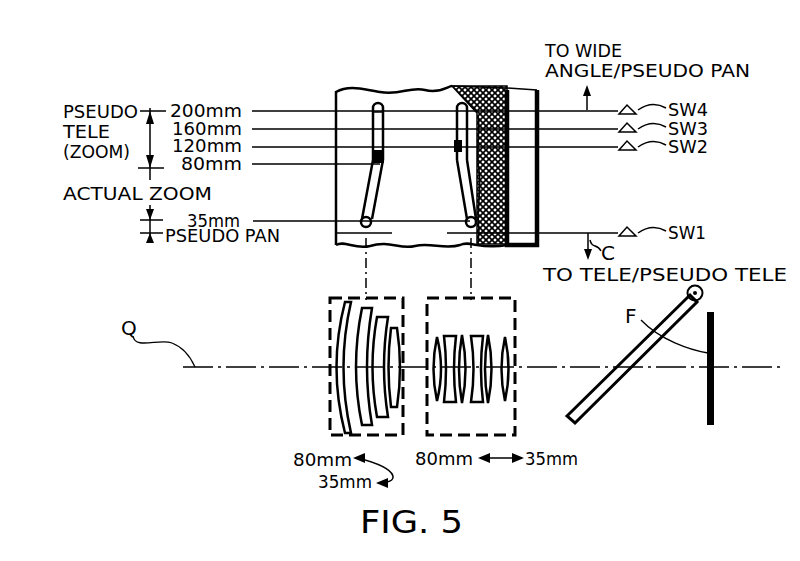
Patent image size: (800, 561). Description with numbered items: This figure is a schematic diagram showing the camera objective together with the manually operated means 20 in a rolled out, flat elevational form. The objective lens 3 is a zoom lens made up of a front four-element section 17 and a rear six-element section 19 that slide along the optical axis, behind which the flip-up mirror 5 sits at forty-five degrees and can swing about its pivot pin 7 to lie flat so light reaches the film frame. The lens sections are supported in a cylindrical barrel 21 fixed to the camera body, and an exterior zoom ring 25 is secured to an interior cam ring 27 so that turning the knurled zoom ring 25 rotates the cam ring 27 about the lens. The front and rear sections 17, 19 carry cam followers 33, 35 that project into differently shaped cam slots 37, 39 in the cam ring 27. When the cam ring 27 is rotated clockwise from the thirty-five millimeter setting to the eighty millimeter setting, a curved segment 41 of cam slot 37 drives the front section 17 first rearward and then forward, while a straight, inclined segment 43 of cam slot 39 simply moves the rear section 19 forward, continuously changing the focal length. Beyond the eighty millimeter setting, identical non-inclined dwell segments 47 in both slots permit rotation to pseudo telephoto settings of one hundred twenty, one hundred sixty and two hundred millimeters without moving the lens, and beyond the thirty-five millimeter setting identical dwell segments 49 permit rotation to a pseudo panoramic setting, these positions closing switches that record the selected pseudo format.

The manually operated means 20 is at (336, 101).
The cam ring 27 is at (404, 90).
The zoom ring 25 is at (484, 84).
The cylindrical barrel 21 is at (523, 100).
The dwell segments 47 is at (380, 113).
The cam slot 39 is at (456, 146).
The cam slot 37 is at (380, 158).
The curved segment 41 is at (379, 183).
The straight, inclined segment 43 is at (470, 194).
The cam follower 33 is at (362, 220).
The cam follower 35 is at (468, 220).
The dwell segments 49 is at (466, 239).
The objective lens 3 is at (331, 321).
The front four-element section 17 is at (331, 422).
The rear six-element section 19 is at (517, 412).
The flip-up mirror 5 is at (612, 385).
The pivot pin 7 is at (703, 298).